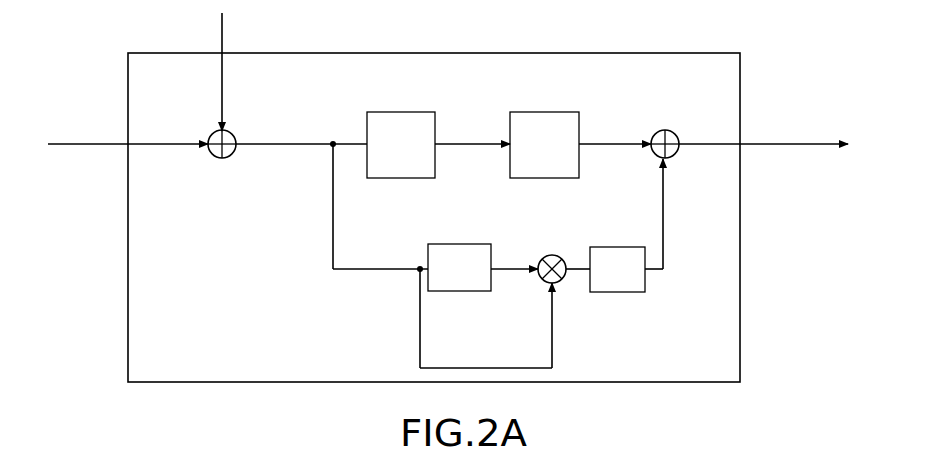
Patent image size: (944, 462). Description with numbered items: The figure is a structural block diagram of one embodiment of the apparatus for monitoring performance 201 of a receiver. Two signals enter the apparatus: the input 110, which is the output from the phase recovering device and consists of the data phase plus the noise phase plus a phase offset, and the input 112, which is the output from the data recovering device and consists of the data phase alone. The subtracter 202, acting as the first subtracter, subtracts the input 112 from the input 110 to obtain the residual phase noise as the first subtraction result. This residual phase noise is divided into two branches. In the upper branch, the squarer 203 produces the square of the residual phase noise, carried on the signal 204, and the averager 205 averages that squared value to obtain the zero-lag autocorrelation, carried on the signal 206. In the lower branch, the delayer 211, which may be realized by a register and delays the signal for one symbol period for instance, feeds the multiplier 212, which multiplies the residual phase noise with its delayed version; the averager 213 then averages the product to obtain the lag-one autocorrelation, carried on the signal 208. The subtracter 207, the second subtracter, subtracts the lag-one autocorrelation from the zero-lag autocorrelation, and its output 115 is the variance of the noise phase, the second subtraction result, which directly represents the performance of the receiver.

The input 110 is at (78, 145).
The input 112 is at (224, 38).
The output 115 is at (770, 144).
The apparatus for monitoring performance 201 is at (705, 53).
The subtracter 202 is at (218, 159).
The squarer 203 is at (428, 112).
The squared signal 204 is at (465, 146).
The averager 205 is at (548, 112).
The expected squared signal 206 is at (618, 146).
The subtracter 207 is at (676, 130).
The squared mean signal 208 is at (666, 222).
The delayer 211 is at (470, 292).
The multiplier 212 is at (547, 255).
The averager 213 is at (636, 292).